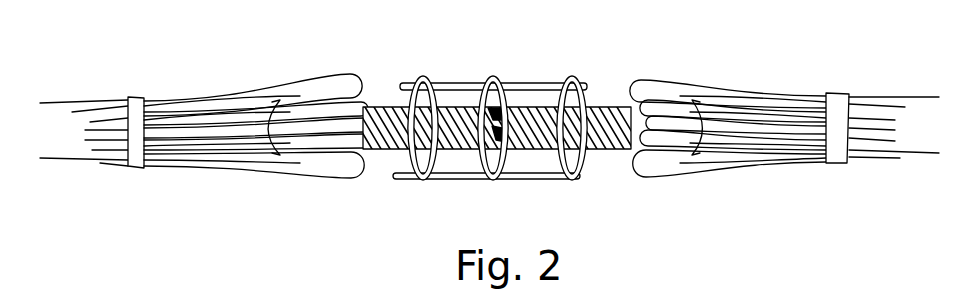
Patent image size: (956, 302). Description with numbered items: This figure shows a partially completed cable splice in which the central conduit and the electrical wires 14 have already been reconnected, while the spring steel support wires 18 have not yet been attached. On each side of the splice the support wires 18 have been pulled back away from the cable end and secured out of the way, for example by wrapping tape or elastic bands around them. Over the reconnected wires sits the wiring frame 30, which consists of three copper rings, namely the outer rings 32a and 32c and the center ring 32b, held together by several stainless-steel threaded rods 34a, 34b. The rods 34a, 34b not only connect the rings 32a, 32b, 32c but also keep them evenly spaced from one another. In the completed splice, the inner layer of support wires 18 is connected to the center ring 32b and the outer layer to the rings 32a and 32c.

The electrical wires 14 is at (600, 100).
The spring steel support wires 18 is at (691, 78).
The wiring frame 30 is at (504, 122).
The ring 32a is at (418, 181).
The center ring 32b is at (486, 180).
The ring 32c is at (590, 178).
The threaded rod 34a is at (531, 78).
The threaded rod 34b is at (540, 180).